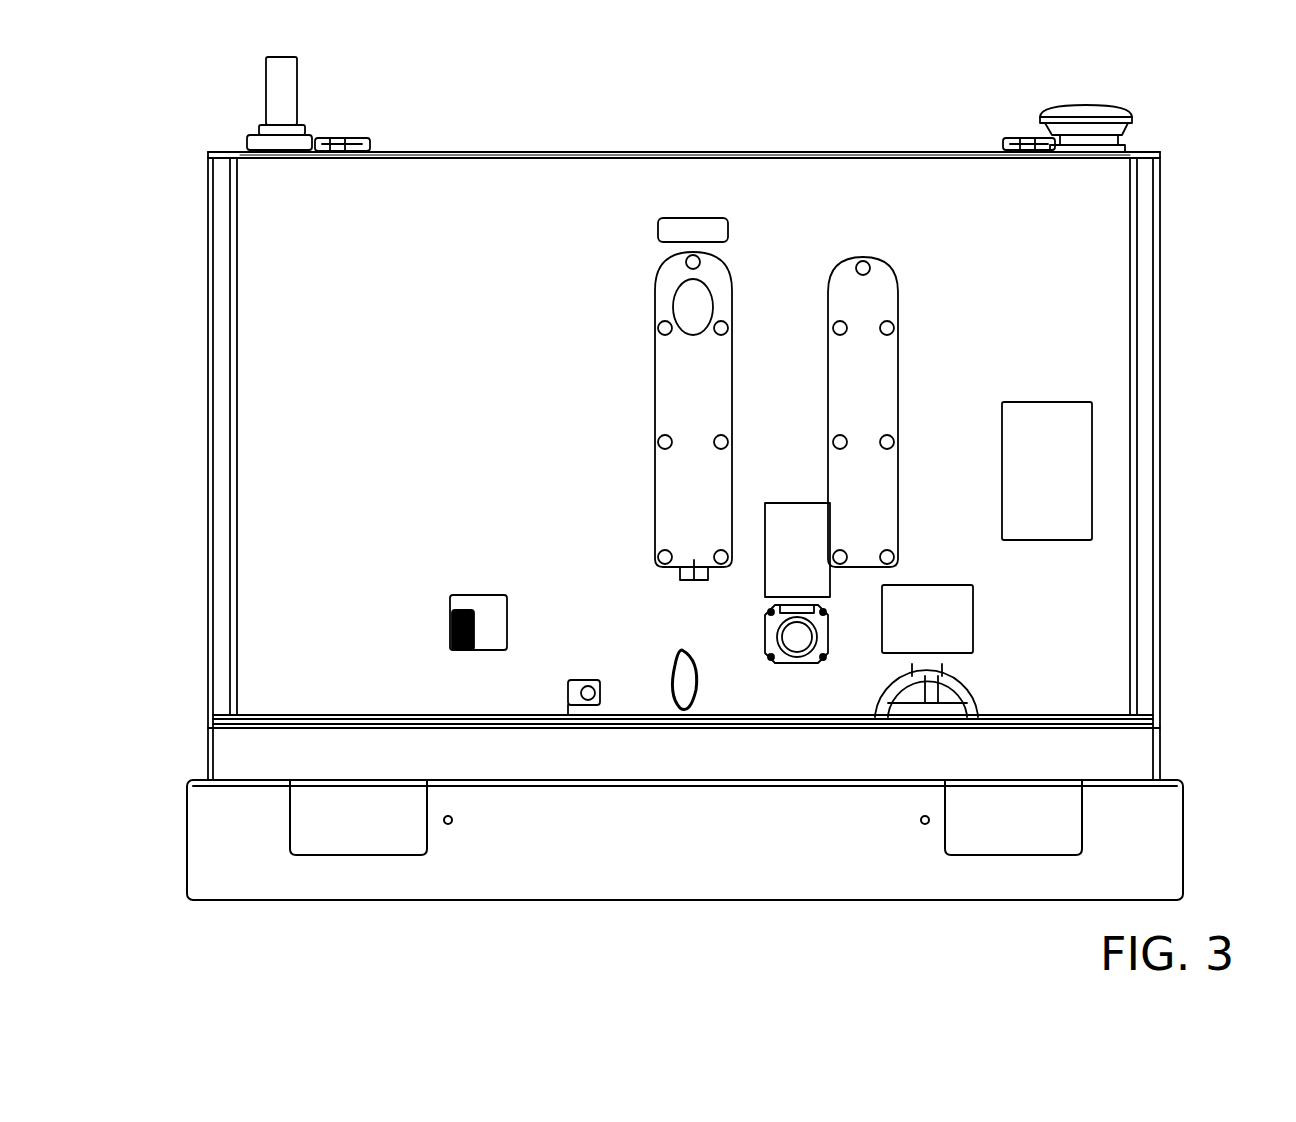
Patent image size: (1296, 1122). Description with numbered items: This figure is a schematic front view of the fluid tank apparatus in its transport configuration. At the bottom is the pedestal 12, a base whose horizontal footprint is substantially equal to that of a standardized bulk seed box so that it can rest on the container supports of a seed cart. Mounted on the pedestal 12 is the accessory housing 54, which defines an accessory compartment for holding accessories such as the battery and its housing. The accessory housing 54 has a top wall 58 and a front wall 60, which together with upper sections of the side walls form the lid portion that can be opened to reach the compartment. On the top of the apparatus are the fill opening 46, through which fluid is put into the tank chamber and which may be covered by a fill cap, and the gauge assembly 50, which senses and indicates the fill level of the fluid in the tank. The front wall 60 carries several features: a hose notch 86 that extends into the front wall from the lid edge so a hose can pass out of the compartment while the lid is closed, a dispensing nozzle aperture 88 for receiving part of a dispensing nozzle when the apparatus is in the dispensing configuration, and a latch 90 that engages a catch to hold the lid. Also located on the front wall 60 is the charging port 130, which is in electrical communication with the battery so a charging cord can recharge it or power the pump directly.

The pedestal 12 is at (1190, 838).
The fill opening 46 is at (1147, 121).
The gauge assembly 50 is at (330, 113).
The accessory housing 54 is at (1165, 253).
The top wall 58 is at (568, 158).
The front wall 60 is at (1077, 343).
The hose notch 86 is at (975, 685).
The dispensing nozzle aperture 88 is at (676, 300).
The latch 90 is at (698, 690).
The charging port 130 is at (797, 665).